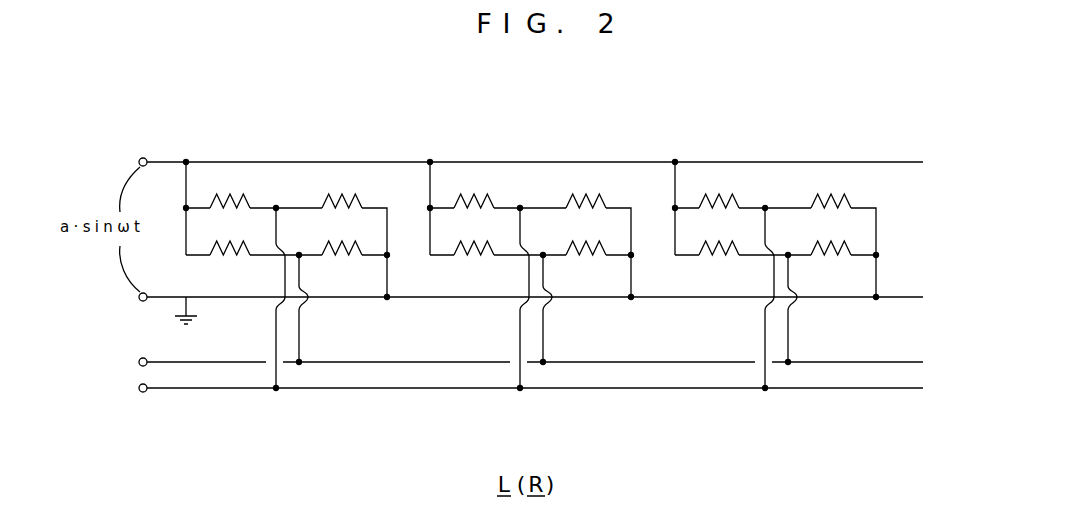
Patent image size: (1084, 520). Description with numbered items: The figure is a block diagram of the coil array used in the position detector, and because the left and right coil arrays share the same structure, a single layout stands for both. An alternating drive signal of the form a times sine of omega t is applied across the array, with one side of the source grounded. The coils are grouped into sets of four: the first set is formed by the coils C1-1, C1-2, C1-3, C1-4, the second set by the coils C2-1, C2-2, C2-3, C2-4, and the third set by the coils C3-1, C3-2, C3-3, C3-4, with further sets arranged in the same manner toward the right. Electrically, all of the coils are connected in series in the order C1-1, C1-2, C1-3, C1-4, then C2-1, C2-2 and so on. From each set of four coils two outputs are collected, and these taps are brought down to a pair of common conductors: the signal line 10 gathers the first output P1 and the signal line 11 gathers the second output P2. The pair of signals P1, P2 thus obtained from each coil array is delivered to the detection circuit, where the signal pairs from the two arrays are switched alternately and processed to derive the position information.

The signal line 10 is at (423, 362).
The signal line 11 is at (438, 388).
The output P1 is at (127, 361).
The output P2 is at (127, 387).
The coil C1-1 is at (229, 188).
The coil C1-2 is at (229, 236).
The coil C1-3 is at (344, 188).
The coil C1-4 is at (344, 236).
The coil C2-1 is at (473, 188).
The coil C2-2 is at (473, 236).
The coil C2-3 is at (588, 188).
The coil C2-4 is at (588, 236).
The coil C3-1 is at (718, 188).
The coil C3-2 is at (718, 236).
The coil C3-3 is at (833, 188).
The coil C3-4 is at (833, 236).